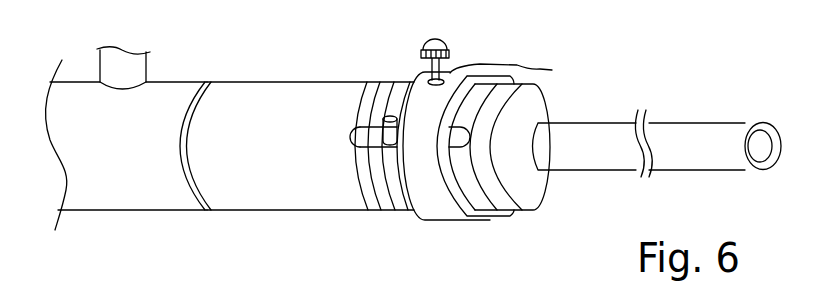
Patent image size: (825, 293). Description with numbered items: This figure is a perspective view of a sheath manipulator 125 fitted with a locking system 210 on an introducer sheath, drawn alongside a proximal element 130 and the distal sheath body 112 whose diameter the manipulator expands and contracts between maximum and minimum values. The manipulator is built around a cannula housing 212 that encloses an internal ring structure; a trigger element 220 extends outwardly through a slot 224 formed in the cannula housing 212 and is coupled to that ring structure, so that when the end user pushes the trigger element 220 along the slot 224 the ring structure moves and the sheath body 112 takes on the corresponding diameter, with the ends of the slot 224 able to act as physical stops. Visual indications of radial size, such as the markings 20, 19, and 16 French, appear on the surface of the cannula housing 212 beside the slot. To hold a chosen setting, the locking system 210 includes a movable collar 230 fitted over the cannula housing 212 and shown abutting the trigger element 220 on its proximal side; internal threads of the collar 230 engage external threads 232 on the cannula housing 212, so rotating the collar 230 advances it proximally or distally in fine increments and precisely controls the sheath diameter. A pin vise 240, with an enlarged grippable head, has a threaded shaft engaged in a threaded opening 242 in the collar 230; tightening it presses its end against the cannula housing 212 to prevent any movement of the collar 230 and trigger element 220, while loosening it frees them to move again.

The handle housing 130 is at (121, 192).
The sheath manipulator 125 is at (252, 101).
The cannula housing 212 is at (277, 185).
The slot 224 is at (352, 138).
The trigger element 220 is at (382, 128).
The external threads 232 is at (389, 116).
The pin vise 240 is at (438, 34).
The locking system 210 is at (473, 50).
The threaded opening 242 is at (520, 70).
The collar 230 is at (429, 200).
The sheath body 112 is at (697, 150).
The 20 French visual indication 20 is at (364, 146).
The 19 French visual indication 19 is at (392, 146).
The 16 French visual indication 16 is at (479, 146).